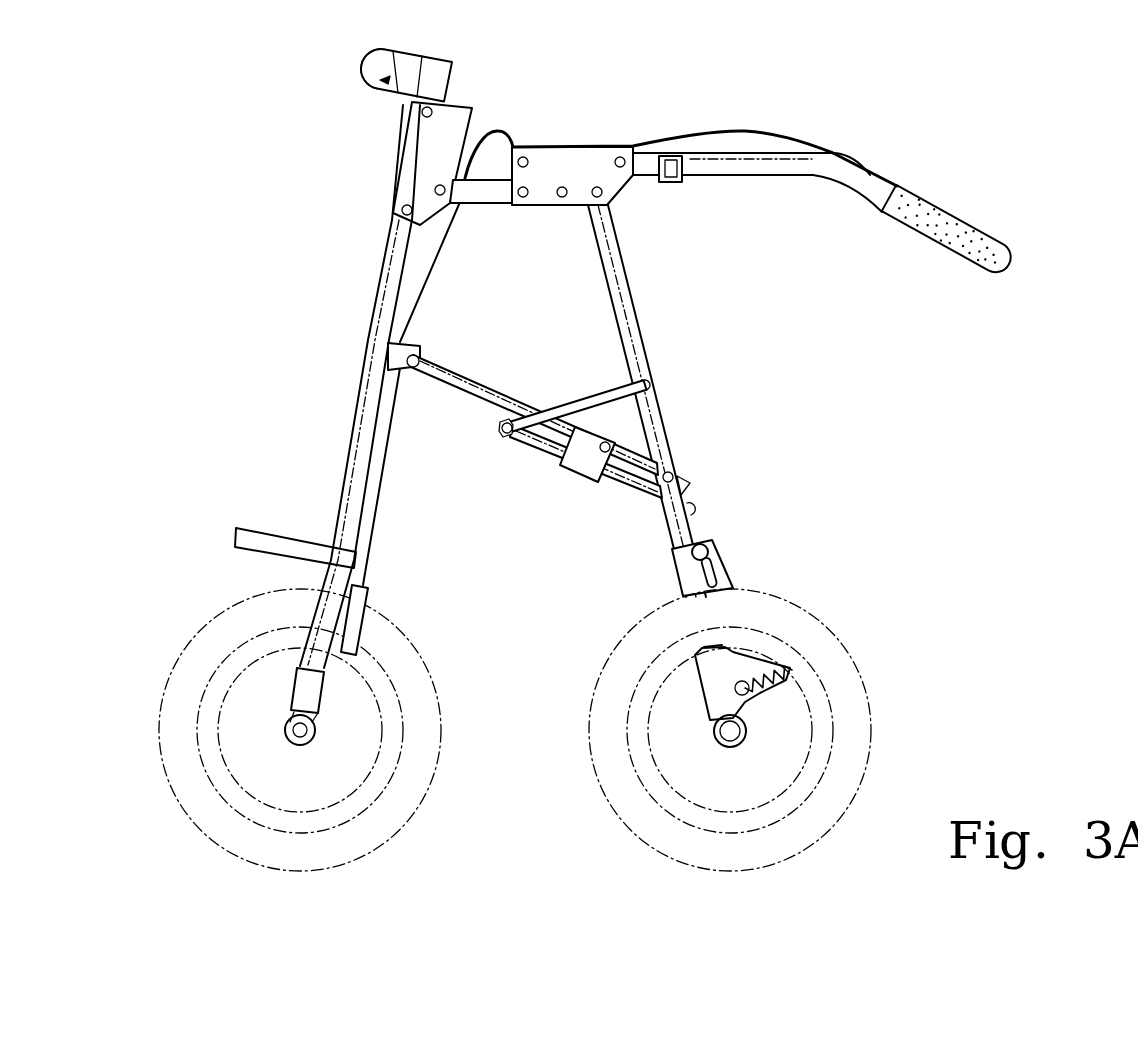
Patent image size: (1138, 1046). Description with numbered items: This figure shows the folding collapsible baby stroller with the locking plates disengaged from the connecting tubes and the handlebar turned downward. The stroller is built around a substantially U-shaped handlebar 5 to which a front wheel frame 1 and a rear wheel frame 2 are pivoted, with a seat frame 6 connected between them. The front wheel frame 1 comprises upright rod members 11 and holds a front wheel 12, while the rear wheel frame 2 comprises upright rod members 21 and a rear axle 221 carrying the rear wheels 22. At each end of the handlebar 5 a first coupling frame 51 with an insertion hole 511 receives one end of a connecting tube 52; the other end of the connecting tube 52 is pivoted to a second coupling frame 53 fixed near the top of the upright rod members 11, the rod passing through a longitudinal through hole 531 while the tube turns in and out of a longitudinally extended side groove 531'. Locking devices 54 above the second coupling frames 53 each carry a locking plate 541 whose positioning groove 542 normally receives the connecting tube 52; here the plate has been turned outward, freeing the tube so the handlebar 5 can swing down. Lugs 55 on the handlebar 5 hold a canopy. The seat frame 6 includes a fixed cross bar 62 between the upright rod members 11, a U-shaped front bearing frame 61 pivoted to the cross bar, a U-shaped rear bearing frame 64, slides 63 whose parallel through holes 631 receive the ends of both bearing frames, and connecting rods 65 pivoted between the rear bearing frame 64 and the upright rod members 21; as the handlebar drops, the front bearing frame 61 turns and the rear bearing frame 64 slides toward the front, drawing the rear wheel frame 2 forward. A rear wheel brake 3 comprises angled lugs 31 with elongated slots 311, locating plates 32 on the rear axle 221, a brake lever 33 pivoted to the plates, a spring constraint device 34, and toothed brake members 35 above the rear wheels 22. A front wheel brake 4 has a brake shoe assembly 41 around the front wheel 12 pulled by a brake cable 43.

The front wheel frame 1 is at (324, 425).
The upright rod members 11 is at (343, 490).
The front wheel 12 is at (222, 602).
The rear wheel frame 2 is at (676, 401).
The upright rod members 21 is at (625, 282).
The rear wheels 22 is at (853, 697).
The rear axle 221 is at (750, 730).
The rear wheel brake 3 is at (743, 622).
The angled lugs 31 is at (670, 556).
The elongated slot 311 is at (705, 583).
The locating plates 32 is at (713, 707).
The brake lever 33 is at (738, 588).
The constraint device 34 is at (790, 672).
The brake members 35 is at (700, 544).
The front wheel brake 4 is at (818, 143).
The brake shoe assembly 41 is at (361, 585).
The brake cable 43 is at (782, 136).
The handlebar 5 is at (853, 178).
The first coupling frames 51 is at (607, 158).
The insertion hole 511 is at (510, 198).
The connecting tubes 52 is at (497, 186).
The second coupling frames 53 is at (405, 188).
The longitudinal through hole 531 is at (351, 252).
The longitudinally extended side groove 531' is at (516, 75).
The locking devices 54 is at (333, 102).
The locking plate 541 is at (362, 72).
The positioning groove 542 is at (378, 82).
The lugs 55 is at (687, 167).
The seat frame 6 is at (480, 405).
The front bearing frame 61 is at (435, 367).
The fixed cross bar 62 is at (393, 353).
The slides 63 is at (588, 458).
The parallel through holes 631 is at (606, 481).
The rear bearing frame 64 is at (540, 442).
The connecting rods 65 is at (625, 380).